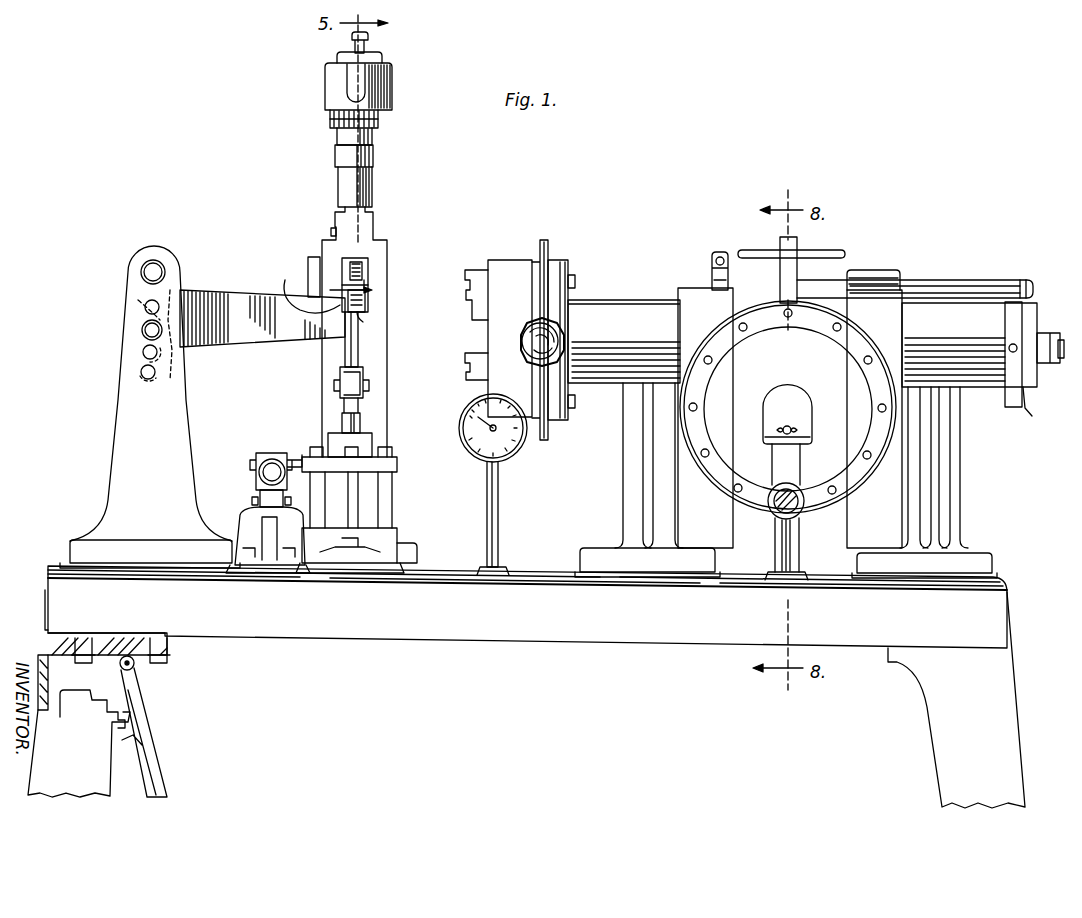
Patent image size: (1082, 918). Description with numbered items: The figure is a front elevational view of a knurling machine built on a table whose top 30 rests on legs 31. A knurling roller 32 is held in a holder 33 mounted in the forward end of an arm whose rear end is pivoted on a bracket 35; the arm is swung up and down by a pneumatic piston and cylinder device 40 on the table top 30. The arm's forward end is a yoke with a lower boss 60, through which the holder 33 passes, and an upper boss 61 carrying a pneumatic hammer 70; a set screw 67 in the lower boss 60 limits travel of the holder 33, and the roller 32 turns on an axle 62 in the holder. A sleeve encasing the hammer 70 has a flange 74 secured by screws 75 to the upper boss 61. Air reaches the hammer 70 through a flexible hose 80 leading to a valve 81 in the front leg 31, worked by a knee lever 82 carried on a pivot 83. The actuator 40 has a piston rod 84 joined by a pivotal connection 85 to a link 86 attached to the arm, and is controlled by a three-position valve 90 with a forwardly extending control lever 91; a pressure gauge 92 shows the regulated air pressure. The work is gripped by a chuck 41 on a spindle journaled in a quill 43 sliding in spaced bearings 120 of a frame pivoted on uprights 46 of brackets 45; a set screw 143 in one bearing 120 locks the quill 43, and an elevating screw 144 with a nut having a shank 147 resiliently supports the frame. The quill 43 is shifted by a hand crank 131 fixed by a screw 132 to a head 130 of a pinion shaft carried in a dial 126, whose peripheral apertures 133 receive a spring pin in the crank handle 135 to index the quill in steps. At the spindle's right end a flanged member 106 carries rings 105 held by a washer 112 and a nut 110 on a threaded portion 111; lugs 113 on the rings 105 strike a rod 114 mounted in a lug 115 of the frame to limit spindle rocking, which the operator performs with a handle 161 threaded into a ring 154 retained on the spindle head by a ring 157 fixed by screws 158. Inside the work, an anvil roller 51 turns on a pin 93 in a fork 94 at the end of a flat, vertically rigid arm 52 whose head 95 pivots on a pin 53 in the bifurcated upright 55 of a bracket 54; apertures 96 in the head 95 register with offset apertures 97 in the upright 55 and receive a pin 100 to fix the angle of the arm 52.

The table top 30 is at (496, 620).
The legs 31 is at (44, 660).
The knurling roller 32 is at (362, 270).
The holder 33 is at (368, 262).
The bracket 35 is at (416, 552).
The pneumatic piston cylinder device 40 is at (367, 493).
The chuck 41 is at (502, 266).
The quill 43 is at (617, 302).
The brackets 45 is at (593, 555).
The upright 46 is at (632, 472).
The anvil roller 51 is at (365, 305).
The arm 52 is at (212, 302).
The pivot pin 53 is at (153, 270).
The bracket 54 is at (80, 547).
The bifurcated upright 55 is at (124, 466).
The lower boss 60 is at (378, 218).
The upper boss 61 is at (385, 92).
The axle 62 is at (368, 287).
The set screw 67 is at (331, 232).
The hammer 70 is at (374, 177).
The flange 74 is at (392, 67).
The screws 75 is at (338, 58).
The hose 80 is at (368, 48).
The valve 81 is at (80, 702).
The knee lever 82 is at (157, 761).
The pivot 83 is at (135, 666).
The piston rod 84 is at (360, 423).
The pivotal connection 85 is at (369, 386).
The link 86 is at (358, 355).
The valve 90 is at (287, 532).
The control lever 91 is at (268, 468).
The pressure gauge 92 is at (473, 455).
The pin 93 is at (300, 306).
The fork 94 is at (363, 322).
The head 95 is at (124, 364).
The apertures 96 is at (138, 300).
The apertures 97 is at (146, 304).
The pin 100 is at (145, 325).
The rings 105 is at (1032, 416).
The flanged member 106 is at (1005, 398).
The nut 110 is at (1050, 332).
The threaded portion 111 is at (1063, 358).
The washer 112 is at (1036, 300).
The lugs 113 is at (1014, 300).
The rod 114 is at (953, 282).
The lug 115 is at (878, 272).
The bearings 120 is at (688, 300).
The dial 126 is at (742, 446).
The head 130 is at (800, 398).
The hand crank 131 is at (800, 462).
The screw 132 is at (792, 428).
The apertures 133 is at (870, 456).
The handle 135 is at (772, 515).
The set screw 143 is at (718, 254).
The elevating screw 144 is at (799, 550).
The shank portion 147 is at (797, 248).
The ring 154 is at (552, 262).
The ring 157 is at (570, 265).
The screws 158 is at (576, 402).
The handle 161 is at (535, 350).